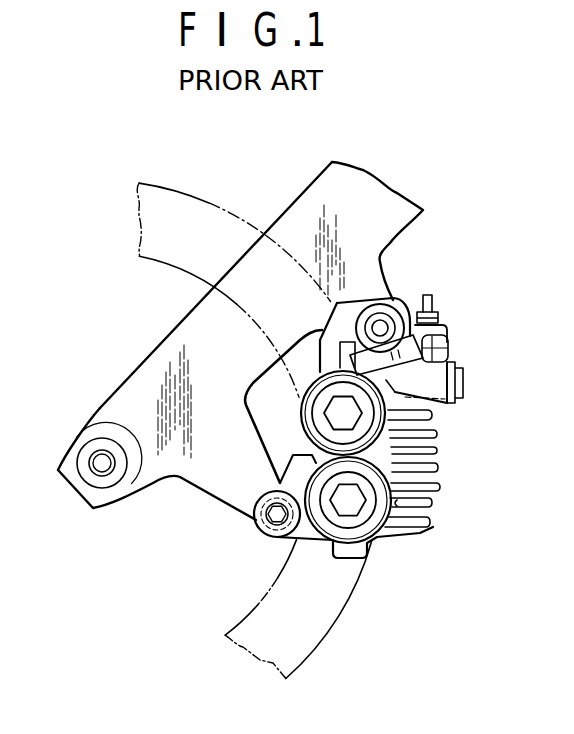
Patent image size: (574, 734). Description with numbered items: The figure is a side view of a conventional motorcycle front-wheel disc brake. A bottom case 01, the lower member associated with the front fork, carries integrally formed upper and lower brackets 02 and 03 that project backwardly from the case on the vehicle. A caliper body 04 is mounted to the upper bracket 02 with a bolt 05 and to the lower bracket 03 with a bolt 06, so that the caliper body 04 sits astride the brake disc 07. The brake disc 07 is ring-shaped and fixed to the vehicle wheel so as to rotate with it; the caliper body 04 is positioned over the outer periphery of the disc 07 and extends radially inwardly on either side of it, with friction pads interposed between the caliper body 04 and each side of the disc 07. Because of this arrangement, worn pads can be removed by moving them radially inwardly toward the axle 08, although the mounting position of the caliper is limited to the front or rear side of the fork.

The bottom case 01 is at (290, 210).
The upper bracket 02 is at (373, 287).
The lower bracket 03 is at (213, 480).
The caliper body 04 is at (420, 470).
The bolt 05 is at (388, 325).
The bolt 06 is at (278, 514).
The brake disc 07 is at (328, 615).
The axle 08 is at (100, 477).